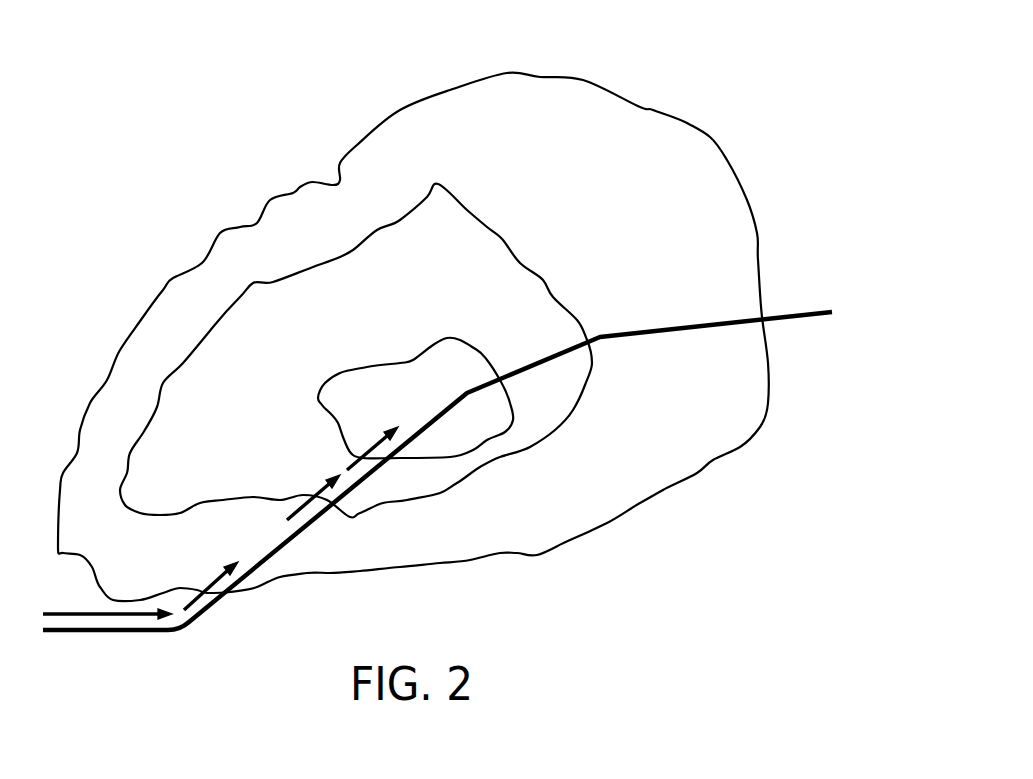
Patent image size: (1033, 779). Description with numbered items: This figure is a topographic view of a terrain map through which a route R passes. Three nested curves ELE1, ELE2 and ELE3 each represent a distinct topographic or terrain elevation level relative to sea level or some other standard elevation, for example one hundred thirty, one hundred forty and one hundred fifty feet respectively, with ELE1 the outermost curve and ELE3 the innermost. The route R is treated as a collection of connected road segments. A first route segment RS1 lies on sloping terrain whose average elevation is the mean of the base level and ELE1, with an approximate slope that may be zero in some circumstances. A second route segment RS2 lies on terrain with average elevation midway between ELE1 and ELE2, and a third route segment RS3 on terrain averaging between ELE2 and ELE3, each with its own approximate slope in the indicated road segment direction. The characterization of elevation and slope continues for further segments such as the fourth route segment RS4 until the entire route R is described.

The first elevation level curve ELE1 is at (583, 80).
The second elevation level curve ELE2 is at (503, 240).
The third elevation level curve ELE3 is at (477, 352).
The route R is at (783, 293).
The first route segment RS1 is at (183, 641).
The second route segment RS2 is at (191, 631).
The third route segment RS3 is at (294, 550).
The fourth route segment RS4 is at (367, 490).